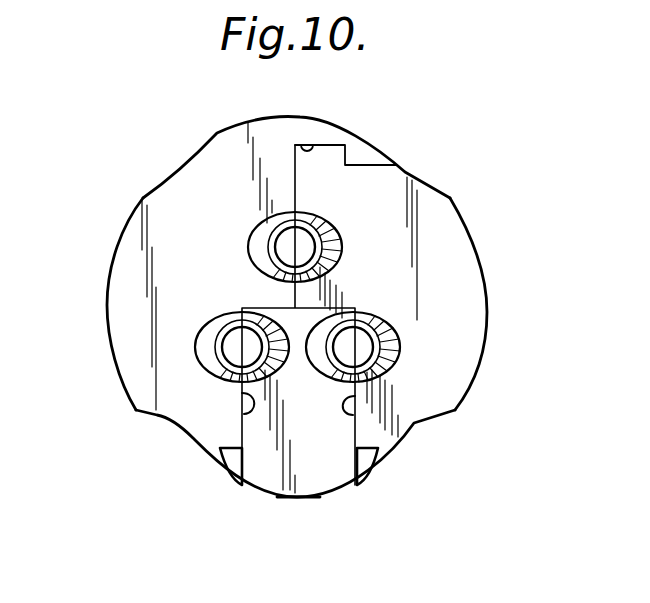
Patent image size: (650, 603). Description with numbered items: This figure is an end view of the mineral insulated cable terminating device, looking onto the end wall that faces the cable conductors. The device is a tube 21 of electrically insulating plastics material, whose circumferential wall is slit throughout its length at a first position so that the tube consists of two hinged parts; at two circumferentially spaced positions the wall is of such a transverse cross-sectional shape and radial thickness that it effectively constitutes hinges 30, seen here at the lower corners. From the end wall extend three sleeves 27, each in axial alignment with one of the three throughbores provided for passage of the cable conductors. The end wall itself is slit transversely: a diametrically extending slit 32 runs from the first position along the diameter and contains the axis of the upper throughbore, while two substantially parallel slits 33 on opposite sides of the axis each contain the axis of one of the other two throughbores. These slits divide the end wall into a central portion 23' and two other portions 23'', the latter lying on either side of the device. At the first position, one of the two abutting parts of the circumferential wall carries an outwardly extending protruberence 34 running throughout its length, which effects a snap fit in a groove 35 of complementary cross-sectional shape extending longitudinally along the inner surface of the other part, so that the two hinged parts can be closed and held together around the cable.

The tube 21 is at (482, 378).
The other portions of the end wall 23'' is at (306, 304).
The central portion of the end wall 23' is at (295, 489).
The sleeves 27 is at (210, 357).
The hinges 30 is at (240, 484).
The diametrically extending slit 32 is at (297, 198).
The parallel slits 33 is at (245, 413).
The protruberence 34 is at (319, 145).
The groove 35 is at (337, 156).